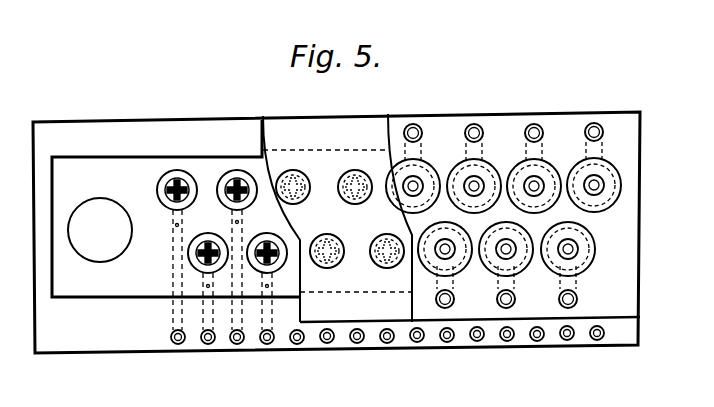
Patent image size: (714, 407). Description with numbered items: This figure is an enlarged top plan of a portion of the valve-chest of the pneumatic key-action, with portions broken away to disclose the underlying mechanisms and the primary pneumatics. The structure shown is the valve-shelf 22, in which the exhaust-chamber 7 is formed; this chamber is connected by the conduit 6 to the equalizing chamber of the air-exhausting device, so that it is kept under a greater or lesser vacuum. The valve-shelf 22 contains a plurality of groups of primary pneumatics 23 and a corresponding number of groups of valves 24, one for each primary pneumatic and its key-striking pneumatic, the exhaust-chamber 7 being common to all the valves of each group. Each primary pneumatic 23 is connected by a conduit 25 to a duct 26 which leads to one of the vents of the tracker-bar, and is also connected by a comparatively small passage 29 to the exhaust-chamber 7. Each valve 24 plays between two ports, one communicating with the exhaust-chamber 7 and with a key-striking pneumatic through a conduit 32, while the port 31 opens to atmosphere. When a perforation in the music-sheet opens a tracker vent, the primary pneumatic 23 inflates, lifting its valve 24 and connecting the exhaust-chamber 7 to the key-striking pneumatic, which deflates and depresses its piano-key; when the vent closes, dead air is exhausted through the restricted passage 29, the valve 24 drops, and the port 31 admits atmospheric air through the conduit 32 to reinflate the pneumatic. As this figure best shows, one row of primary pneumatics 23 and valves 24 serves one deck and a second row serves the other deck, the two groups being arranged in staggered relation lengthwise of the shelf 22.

The conduit 6 is at (100, 230).
The exhaust-chamber 7 is at (137, 167).
The valve-shelf 22 is at (398, 128).
The primary pneumatic 23 is at (250, 244).
The valve 24 is at (303, 197).
The conduit 25 is at (198, 283).
The duct 26 is at (182, 343).
The passage 29 is at (175, 225).
The port 31 is at (482, 190).
The conduit 32 is at (534, 133).